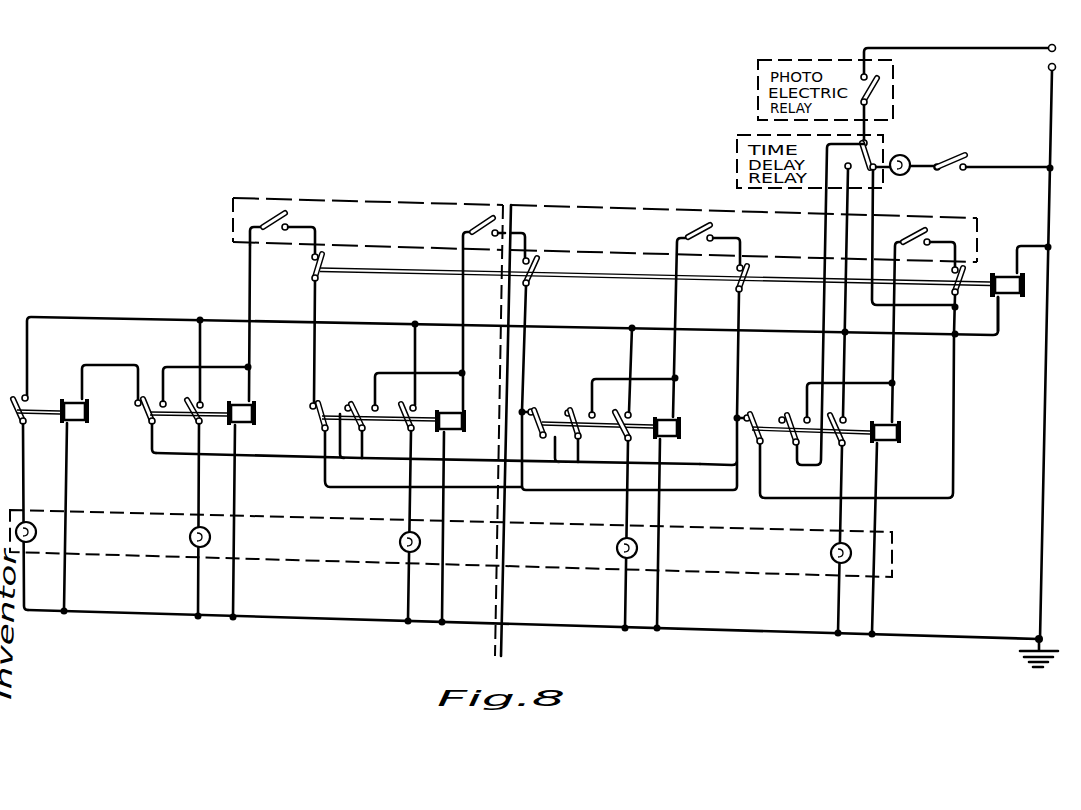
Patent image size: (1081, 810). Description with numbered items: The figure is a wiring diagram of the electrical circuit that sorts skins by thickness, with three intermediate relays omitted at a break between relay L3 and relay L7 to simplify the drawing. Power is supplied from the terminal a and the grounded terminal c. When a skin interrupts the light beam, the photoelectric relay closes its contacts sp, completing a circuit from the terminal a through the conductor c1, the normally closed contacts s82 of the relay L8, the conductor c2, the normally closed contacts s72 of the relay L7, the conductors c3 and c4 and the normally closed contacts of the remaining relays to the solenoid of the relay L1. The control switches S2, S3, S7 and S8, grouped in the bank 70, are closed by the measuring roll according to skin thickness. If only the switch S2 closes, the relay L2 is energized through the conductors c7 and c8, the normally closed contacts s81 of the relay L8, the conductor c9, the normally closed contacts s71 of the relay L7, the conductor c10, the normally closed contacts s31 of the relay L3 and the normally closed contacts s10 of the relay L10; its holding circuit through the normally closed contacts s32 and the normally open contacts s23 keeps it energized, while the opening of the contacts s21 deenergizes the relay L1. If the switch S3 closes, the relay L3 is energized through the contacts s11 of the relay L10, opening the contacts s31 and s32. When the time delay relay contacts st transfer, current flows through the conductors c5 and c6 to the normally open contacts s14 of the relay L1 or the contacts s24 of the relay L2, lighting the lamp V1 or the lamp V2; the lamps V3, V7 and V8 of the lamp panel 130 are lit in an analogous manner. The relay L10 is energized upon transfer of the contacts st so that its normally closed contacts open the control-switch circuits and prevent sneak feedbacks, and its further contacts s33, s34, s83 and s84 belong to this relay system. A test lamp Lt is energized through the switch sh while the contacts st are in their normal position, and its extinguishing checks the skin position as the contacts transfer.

The power source terminal a is at (971, 55).
The grounded power source terminal c is at (1059, 347).
The photoelectric relay contacts sp is at (876, 92).
The time delay relay contacts st is at (871, 149).
The test lamp Lt is at (911, 157).
The switch sh is at (961, 155).
The conductor c5 is at (826, 203).
The conductor c7 is at (873, 227).
The conductor c1 is at (767, 240).
The switch bank 70 is at (232, 223).
The control switch S2 is at (265, 218).
The normally closed contacts of relay L10 s10 is at (324, 256).
The control switch S3 is at (482, 215).
The contacts s11 is at (537, 259).
The control switch S7 is at (693, 222).
The control switch S8 is at (926, 229).
The conductor c8 is at (957, 413).
The conductor c6 is at (137, 314).
The relay L10 is at (1008, 302).
The normally open contacts of relay L1 s14 is at (27, 396).
The relay L1 is at (77, 429).
The contacts s21 is at (136, 402).
The normally open relay contacts s23 is at (167, 394).
The normally open contacts of relay L2 s24 is at (205, 394).
The relay L2 is at (247, 430).
The conductor c4 is at (171, 455).
The conductor c3 is at (343, 484).
The conductor c2 is at (719, 466).
The conductor c9 is at (672, 494).
The conductor c10 is at (341, 488).
The normally closed contacts of relay L3 s31 is at (312, 404).
The normally closed contacts of relay L3 s32 is at (350, 404).
The relay contact s33 is at (380, 404).
The relay contact s34 is at (416, 403).
The relay L3 is at (453, 436).
The normally closed contacts of relay L7 s71 is at (538, 401).
The normally closed contacts of relay L7 s72 is at (569, 409).
The relay L7 is at (670, 442).
The normally closed contacts of relay L8 s81 is at (745, 416).
The normally closed contacts of relay L8 s82 is at (780, 417).
The relay contact s83 is at (806, 416).
The relay contact s84 is at (845, 419).
The relay L8 is at (890, 449).
The lamp panel 130 is at (272, 556).
The lamp V1 is at (28, 521).
The lamp V2 is at (189, 535).
The lamp V3 is at (399, 542).
The lamp V7 is at (616, 549).
The lamp V8 is at (831, 554).